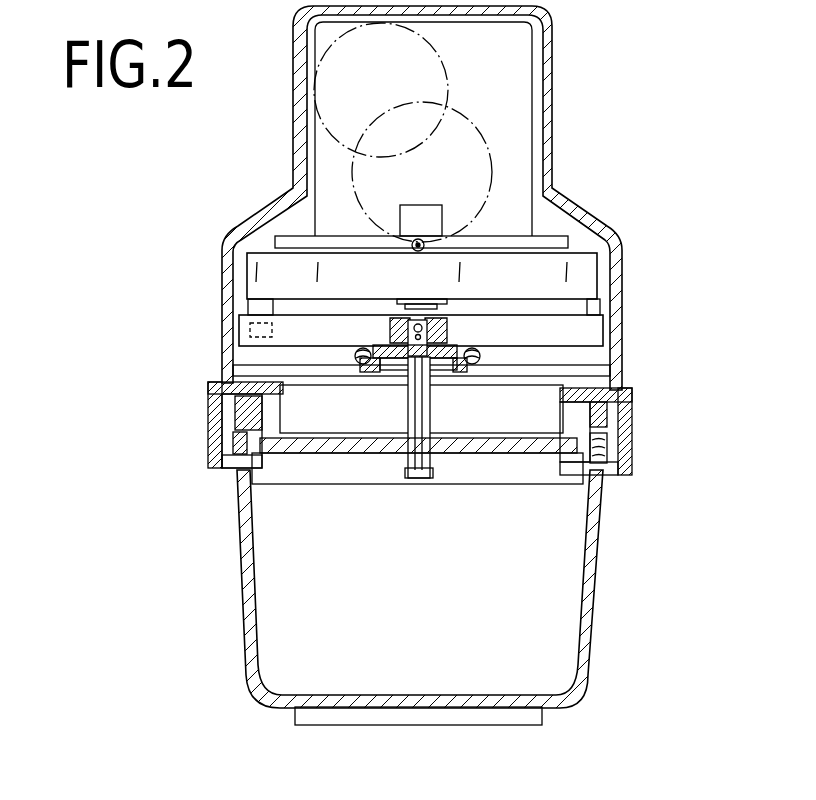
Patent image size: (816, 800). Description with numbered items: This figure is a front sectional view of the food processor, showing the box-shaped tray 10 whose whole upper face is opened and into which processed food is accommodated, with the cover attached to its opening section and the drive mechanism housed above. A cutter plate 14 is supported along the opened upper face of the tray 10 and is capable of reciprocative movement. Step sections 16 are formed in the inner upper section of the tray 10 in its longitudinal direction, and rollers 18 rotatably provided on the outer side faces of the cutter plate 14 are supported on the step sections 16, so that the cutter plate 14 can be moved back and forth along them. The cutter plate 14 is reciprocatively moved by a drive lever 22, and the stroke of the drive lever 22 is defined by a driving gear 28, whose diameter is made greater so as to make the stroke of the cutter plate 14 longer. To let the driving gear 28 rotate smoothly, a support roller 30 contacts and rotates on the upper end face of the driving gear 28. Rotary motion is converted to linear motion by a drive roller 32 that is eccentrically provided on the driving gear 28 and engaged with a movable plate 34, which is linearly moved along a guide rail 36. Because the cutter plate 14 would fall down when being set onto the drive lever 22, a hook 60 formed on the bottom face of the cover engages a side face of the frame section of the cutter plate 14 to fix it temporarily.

The tray 10 is at (590, 648).
The cutter plate 14 is at (288, 477).
The step sections 16 is at (210, 458).
The rollers 18 is at (210, 436).
The drive lever 22 is at (420, 478).
The driving gear 28 is at (588, 270).
The support roller 30 is at (420, 244).
The drive roller 32 is at (258, 328).
The movable plate 34 is at (588, 333).
The guide rail 36 is at (610, 369).
The hook 60 is at (228, 383).